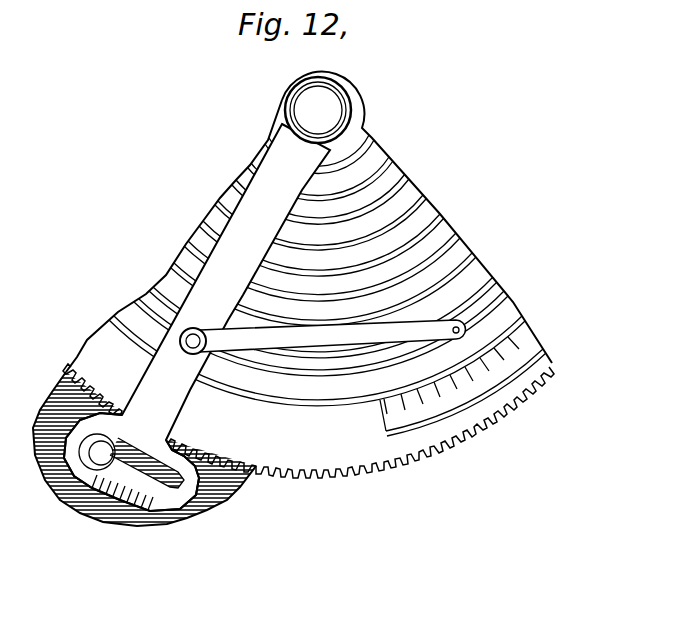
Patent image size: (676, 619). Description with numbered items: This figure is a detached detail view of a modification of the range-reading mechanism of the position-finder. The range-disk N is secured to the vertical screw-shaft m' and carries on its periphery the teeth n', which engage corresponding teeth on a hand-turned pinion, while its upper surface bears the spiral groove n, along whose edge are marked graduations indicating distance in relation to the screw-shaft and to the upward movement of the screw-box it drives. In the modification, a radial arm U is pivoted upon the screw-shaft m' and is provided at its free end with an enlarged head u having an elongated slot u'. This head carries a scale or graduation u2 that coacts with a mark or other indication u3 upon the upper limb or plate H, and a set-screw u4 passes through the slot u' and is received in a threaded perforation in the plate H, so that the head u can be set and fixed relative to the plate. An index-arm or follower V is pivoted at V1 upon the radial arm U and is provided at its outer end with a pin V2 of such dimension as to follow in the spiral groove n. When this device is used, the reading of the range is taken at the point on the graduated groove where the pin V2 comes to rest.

The vertical screw-shaft m' is at (347, 110).
The radial arm U is at (197, 317).
The range-disk N is at (488, 290).
The spiral groove n is at (337, 284).
The teeth n' is at (315, 421).
The index-arm or follower V is at (258, 343).
The pivot of index-arm V1 is at (195, 355).
The pin V2 is at (465, 331).
The upper limb or plate H is at (215, 506).
The enlarged head u is at (141, 462).
The elongated slot u' is at (173, 502).
The scale or graduation u2 is at (135, 497).
The mark or indication u3 is at (84, 466).
The set-screw u4 is at (113, 451).